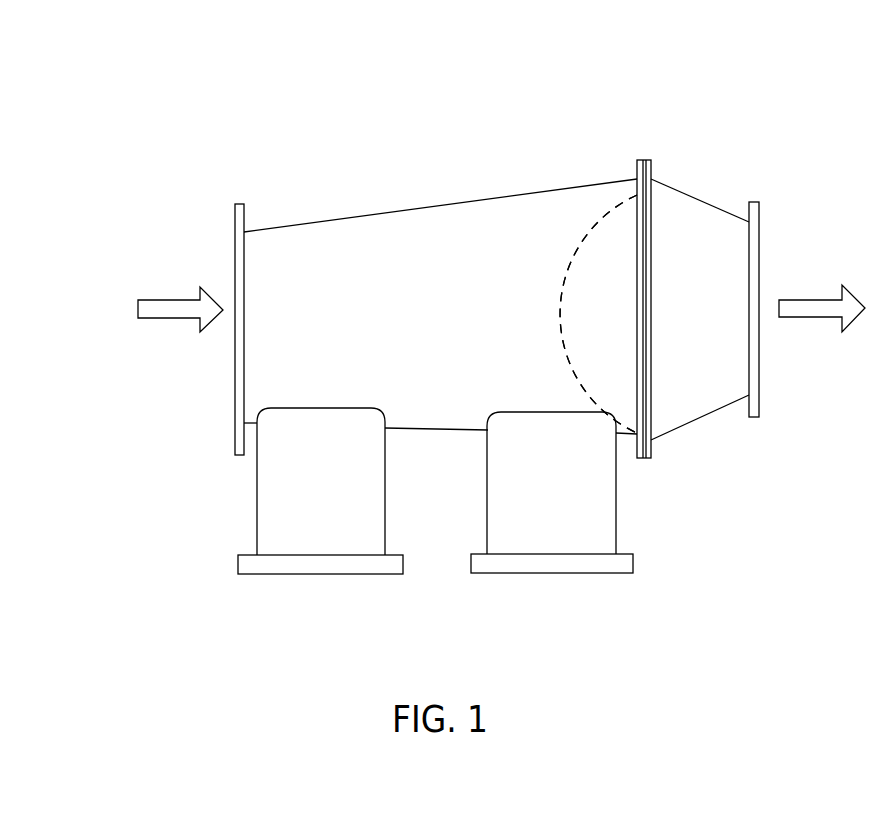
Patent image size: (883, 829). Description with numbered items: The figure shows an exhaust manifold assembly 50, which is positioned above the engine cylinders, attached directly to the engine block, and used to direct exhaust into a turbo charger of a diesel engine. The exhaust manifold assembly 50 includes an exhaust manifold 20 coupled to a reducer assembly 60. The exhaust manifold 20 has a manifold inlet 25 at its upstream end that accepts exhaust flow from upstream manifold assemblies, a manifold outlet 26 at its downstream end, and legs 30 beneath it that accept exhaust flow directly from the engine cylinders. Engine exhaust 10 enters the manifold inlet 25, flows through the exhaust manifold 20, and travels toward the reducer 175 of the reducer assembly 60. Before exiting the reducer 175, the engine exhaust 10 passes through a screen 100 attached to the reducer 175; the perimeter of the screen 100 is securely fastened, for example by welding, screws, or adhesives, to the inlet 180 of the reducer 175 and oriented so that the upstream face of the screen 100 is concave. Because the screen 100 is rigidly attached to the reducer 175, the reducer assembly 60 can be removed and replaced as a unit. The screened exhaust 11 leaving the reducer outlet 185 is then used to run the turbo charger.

The engine exhaust 10 is at (159, 318).
The screened exhaust 11 is at (820, 298).
The exhaust manifold 20 is at (355, 213).
The manifold inlet 25 is at (235, 222).
The manifold outlet 26 is at (637, 220).
The legs 30 is at (318, 574).
The exhaust manifold assembly 50 is at (421, 83).
The reducer assembly 60 is at (705, 156).
The screen 100 is at (576, 239).
The reducer 175 is at (707, 414).
The inlet 180 is at (641, 159).
The reducer outlet 185 is at (759, 400).